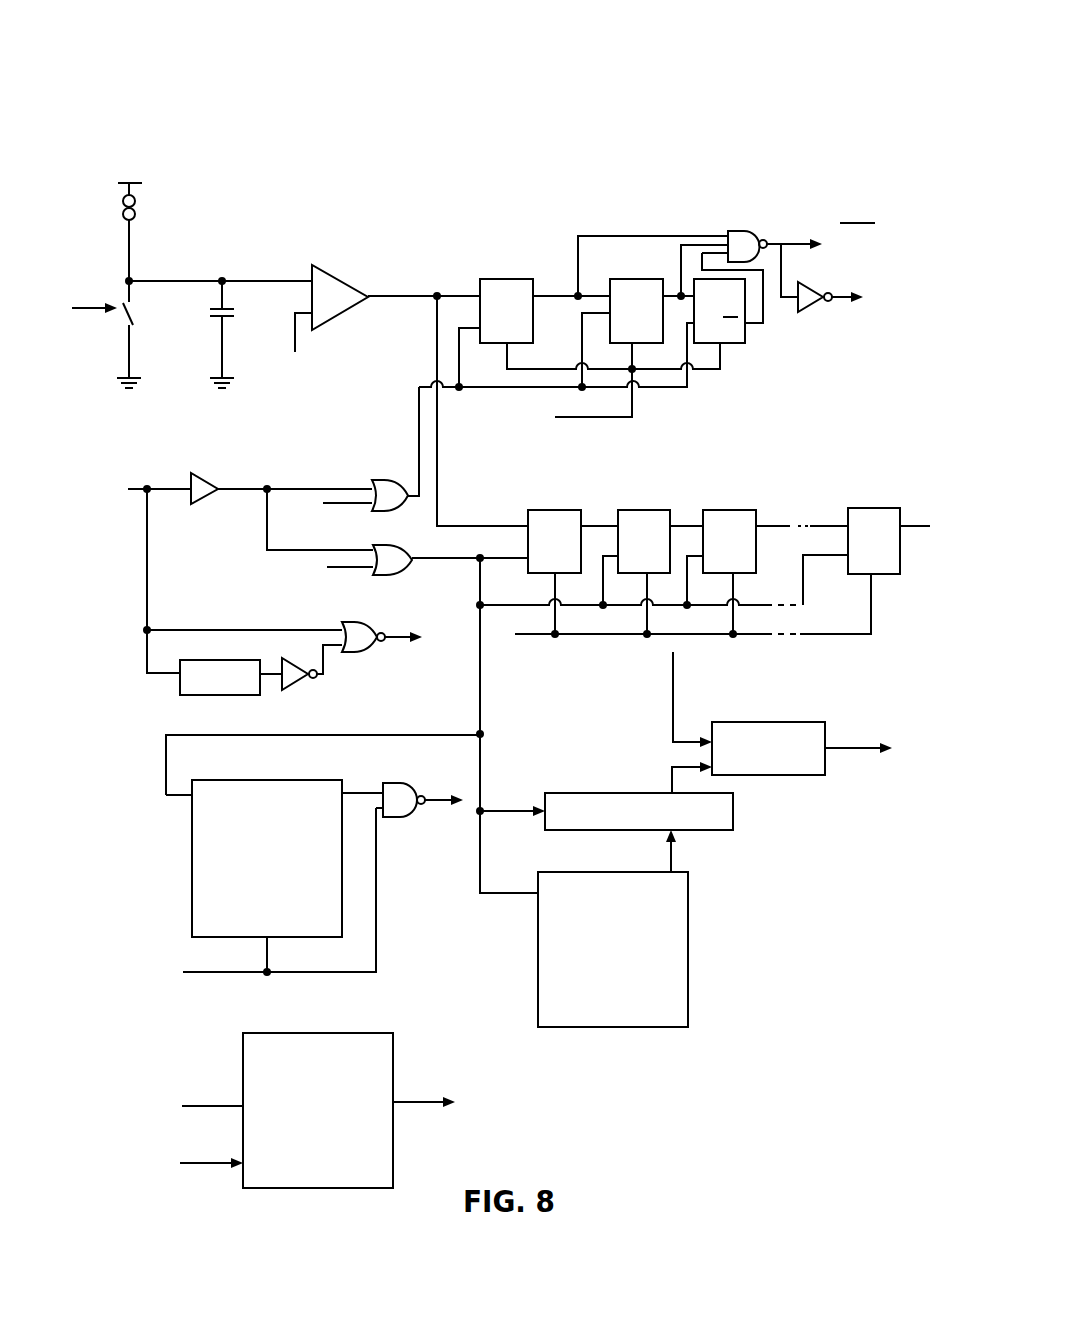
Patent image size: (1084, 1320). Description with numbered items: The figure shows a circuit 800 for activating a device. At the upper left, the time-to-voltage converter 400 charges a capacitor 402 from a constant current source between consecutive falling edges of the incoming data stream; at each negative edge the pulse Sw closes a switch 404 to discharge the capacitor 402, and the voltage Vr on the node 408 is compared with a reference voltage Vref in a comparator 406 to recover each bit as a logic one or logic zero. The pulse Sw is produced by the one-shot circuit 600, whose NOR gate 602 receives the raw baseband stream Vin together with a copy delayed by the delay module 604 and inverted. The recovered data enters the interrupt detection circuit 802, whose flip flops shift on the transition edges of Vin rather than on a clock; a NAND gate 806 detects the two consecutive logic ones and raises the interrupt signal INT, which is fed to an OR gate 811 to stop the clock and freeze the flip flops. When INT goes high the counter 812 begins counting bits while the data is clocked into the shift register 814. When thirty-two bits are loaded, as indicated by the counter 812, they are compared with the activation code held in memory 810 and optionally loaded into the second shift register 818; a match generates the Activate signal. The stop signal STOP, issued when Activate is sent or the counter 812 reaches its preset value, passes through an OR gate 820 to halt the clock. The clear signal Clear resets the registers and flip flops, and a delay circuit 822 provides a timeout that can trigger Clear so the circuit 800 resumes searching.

The circuit for activating a device 800 is at (191, 114).
The time-to-voltage converter 400 is at (317, 221).
The capacitor 402 is at (229, 322).
The switch 404 is at (156, 320).
The comparator 406 is at (338, 276).
The node 408 is at (255, 281).
The interrupt detection circuit 802 is at (628, 209).
The NAND gate 806 is at (757, 232).
The OR gate 811 is at (371, 475).
The OR gate 820 is at (400, 573).
The one-shot circuit 600 is at (104, 622).
The NOR gate 602 is at (370, 650).
The delay module 604 is at (178, 692).
The shift register 814 is at (900, 488).
The counter 812 is at (192, 848).
The second shift register 818 is at (600, 793).
The memory 810 is at (688, 947).
The delay circuit 822 is at (243, 1043).